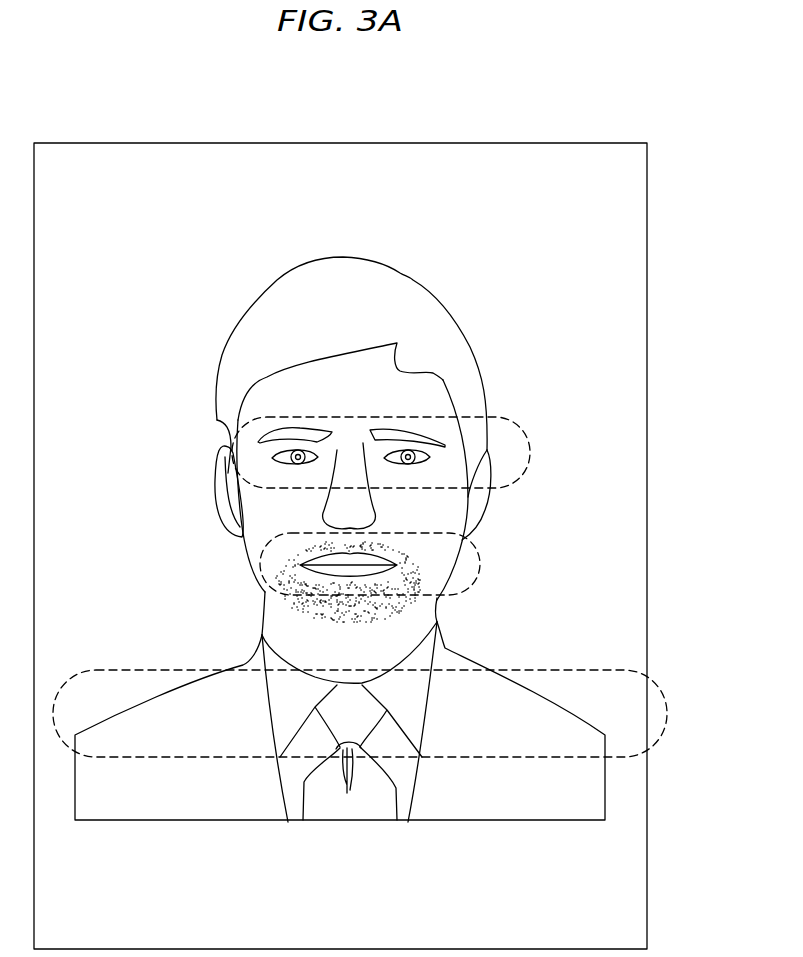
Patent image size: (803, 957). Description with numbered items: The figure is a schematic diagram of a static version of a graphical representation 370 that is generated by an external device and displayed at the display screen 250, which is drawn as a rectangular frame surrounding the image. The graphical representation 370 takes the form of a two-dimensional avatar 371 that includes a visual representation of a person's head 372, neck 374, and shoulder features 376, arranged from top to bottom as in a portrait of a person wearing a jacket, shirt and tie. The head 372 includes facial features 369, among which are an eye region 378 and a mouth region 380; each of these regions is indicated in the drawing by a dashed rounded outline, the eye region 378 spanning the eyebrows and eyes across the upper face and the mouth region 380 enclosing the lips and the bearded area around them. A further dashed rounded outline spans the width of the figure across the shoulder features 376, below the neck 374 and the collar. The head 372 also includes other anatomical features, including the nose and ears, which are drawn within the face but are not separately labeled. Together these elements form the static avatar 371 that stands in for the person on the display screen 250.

The display screen 250 is at (338, 142).
The facial features 369 is at (440, 398).
The graphical representation 370 is at (190, 583).
The two-dimensional avatar 371 is at (272, 280).
The head 372 is at (488, 310).
The neck 374 is at (458, 609).
The shoulder features 376 is at (663, 697).
The eye region 378 is at (217, 420).
The mouth region 380 is at (476, 563).